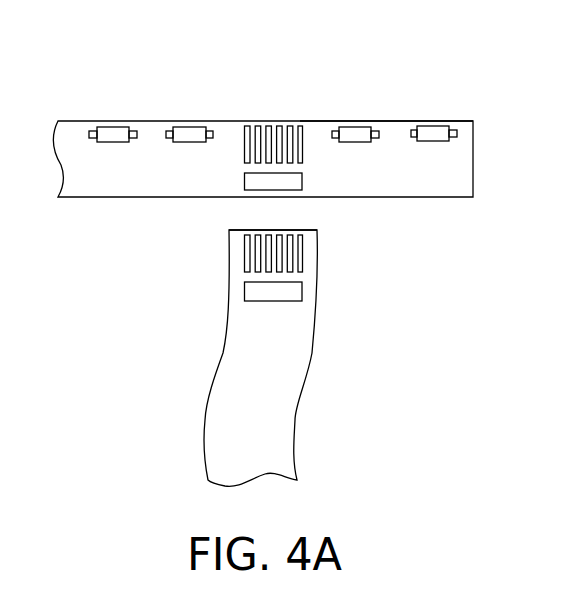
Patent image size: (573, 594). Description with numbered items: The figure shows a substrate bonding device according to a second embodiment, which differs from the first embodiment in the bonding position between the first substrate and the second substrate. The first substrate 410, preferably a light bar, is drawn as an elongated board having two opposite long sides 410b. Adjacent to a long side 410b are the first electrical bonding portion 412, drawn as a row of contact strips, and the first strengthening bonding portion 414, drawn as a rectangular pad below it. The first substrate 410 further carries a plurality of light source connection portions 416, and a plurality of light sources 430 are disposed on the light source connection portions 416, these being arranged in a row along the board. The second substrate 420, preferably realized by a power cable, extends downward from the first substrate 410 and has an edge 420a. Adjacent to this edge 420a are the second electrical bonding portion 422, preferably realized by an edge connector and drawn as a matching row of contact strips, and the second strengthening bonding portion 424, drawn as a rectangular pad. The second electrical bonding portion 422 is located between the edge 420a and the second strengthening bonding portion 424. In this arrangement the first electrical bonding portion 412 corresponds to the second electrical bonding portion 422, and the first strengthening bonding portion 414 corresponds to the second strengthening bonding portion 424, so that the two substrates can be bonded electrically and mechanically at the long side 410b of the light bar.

The first substrate 410 is at (92, 214).
The long side 410b is at (398, 121).
The light source 430 is at (105, 127).
The light source connection portion 416 is at (135, 131).
The first electrical bonding portion 412 is at (269, 121).
The first strengthening bonding portion 414 is at (302, 182).
The second substrate 420 is at (181, 361).
The edge 420a is at (240, 230).
The second electrical bonding portion 422 is at (302, 251).
The second strengthening bonding portion 424 is at (302, 290).